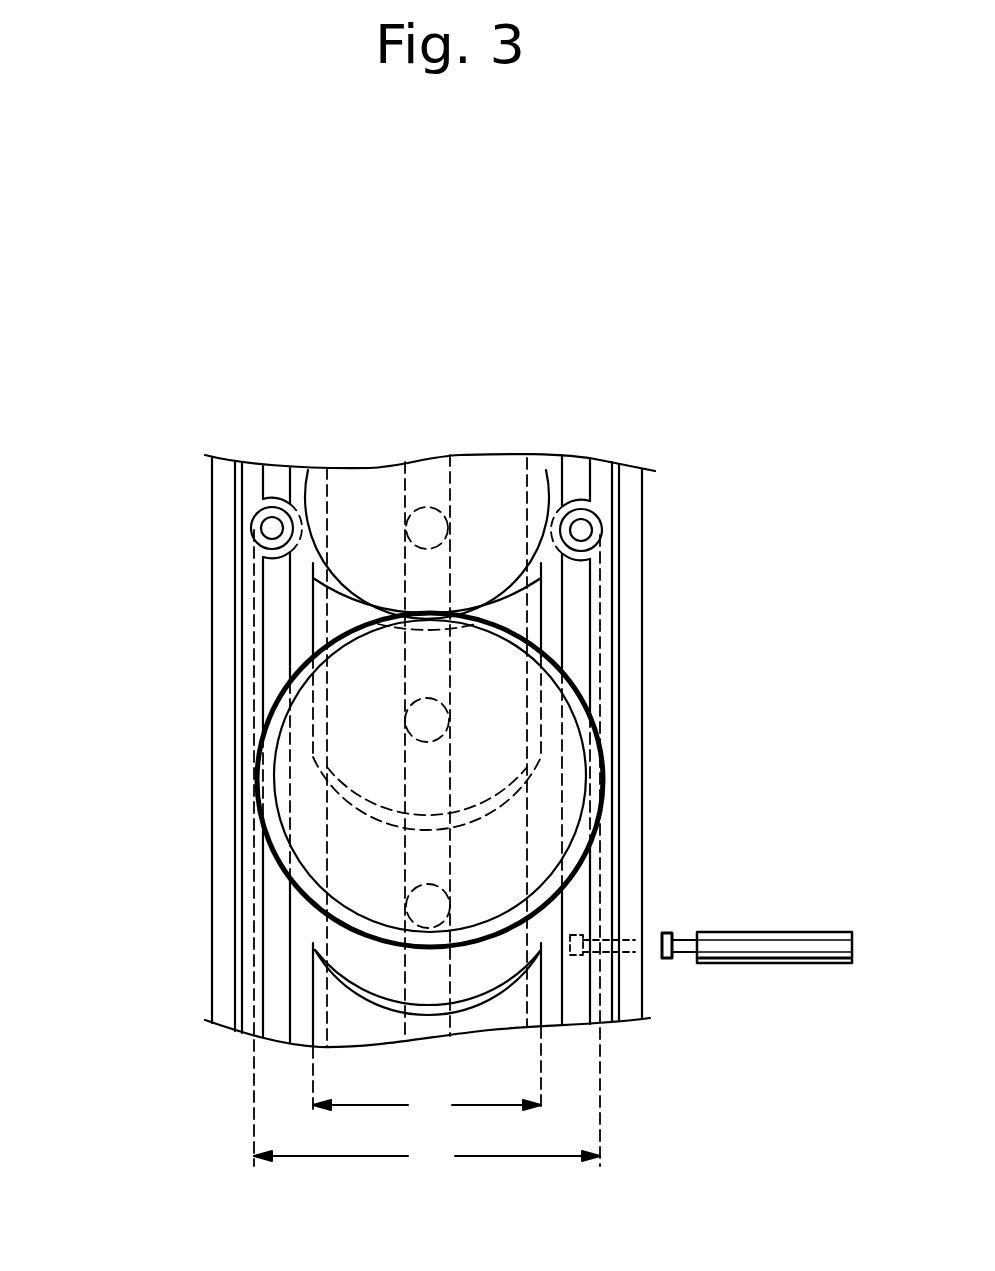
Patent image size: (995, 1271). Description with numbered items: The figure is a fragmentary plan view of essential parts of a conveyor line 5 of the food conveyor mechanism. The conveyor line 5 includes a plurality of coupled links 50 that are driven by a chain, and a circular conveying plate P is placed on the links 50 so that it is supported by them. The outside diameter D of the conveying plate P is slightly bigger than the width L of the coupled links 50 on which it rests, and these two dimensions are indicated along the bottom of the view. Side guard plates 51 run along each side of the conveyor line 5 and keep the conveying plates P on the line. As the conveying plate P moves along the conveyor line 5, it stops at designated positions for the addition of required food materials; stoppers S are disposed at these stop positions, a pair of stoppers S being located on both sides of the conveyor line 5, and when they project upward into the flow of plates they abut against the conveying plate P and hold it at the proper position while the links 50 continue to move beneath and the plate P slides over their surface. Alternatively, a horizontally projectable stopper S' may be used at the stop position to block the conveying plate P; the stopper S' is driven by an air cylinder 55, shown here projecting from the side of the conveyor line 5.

The conveyor line 5 is at (572, 424).
The coupled links 50 is at (362, 500).
The side guard plates 51 is at (619, 600).
The stoppers S is at (421, 504).
The conveying plate P is at (589, 704).
The stoppers S' is at (670, 914).
The air cylinders 55 is at (829, 942).
The width of coupled links L is at (427, 1079).
The outside diameter of conveying plate D is at (427, 857).